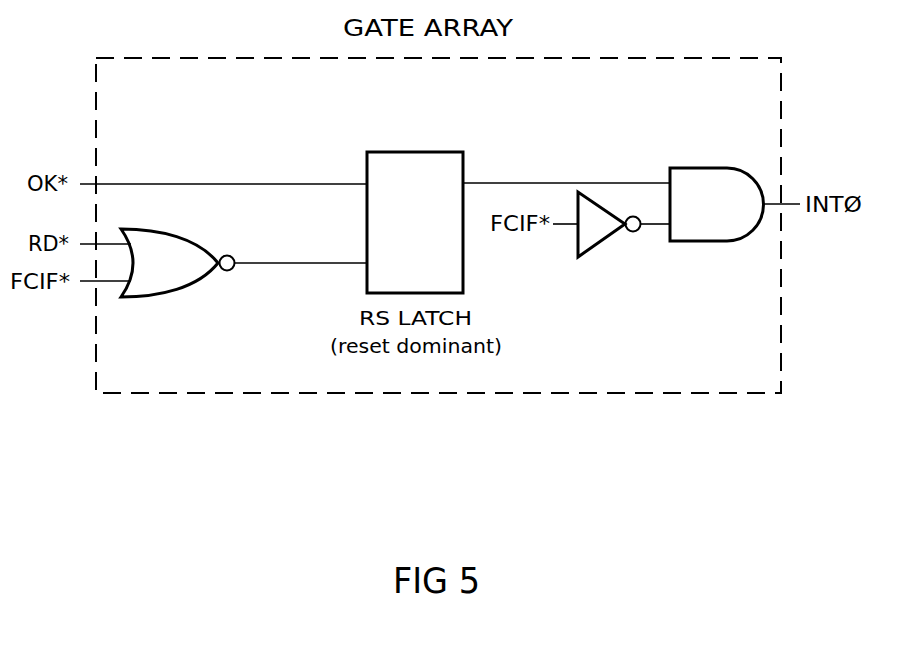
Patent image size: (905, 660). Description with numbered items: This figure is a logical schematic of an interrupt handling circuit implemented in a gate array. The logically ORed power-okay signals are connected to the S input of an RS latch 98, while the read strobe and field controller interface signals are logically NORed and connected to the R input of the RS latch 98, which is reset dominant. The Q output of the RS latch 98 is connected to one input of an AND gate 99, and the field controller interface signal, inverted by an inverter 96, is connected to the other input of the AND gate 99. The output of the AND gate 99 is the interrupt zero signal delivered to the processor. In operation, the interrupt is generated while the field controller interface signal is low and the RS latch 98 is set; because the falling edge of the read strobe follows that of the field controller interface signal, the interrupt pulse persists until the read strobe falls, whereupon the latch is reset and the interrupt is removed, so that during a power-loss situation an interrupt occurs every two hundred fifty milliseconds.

The RS latch 98 is at (428, 152).
The AND gate 99 is at (713, 168).
The inverter 96 is at (600, 243).